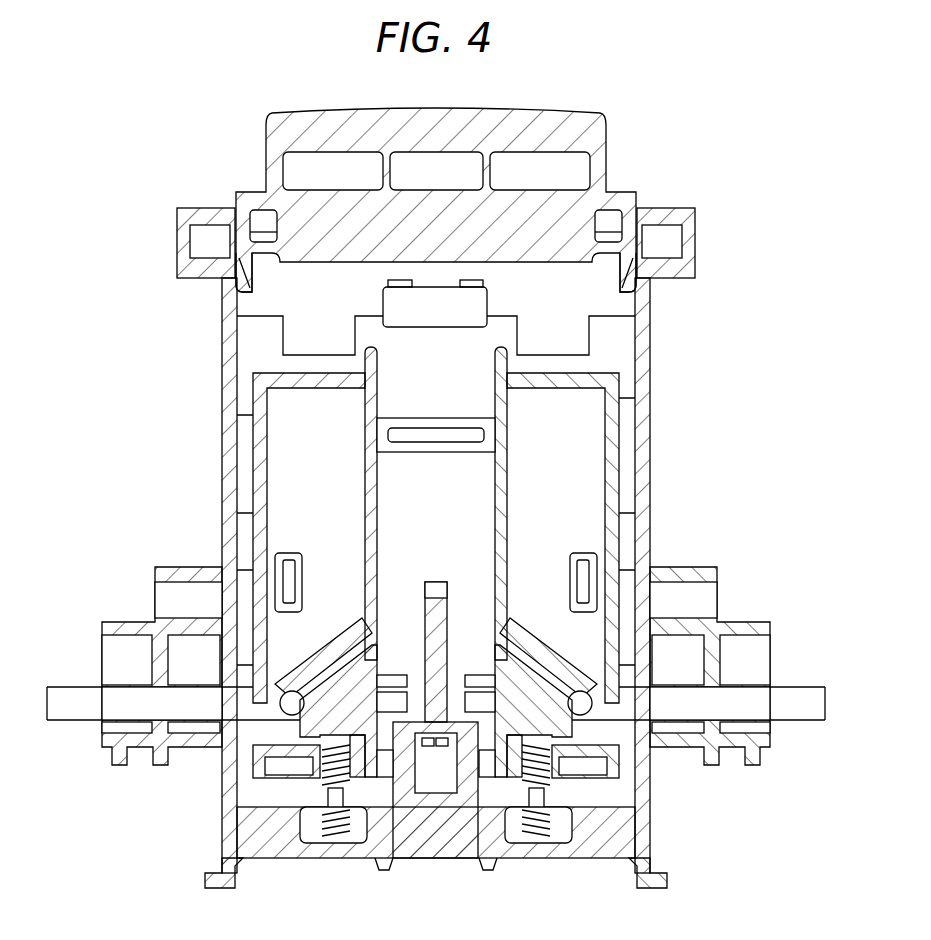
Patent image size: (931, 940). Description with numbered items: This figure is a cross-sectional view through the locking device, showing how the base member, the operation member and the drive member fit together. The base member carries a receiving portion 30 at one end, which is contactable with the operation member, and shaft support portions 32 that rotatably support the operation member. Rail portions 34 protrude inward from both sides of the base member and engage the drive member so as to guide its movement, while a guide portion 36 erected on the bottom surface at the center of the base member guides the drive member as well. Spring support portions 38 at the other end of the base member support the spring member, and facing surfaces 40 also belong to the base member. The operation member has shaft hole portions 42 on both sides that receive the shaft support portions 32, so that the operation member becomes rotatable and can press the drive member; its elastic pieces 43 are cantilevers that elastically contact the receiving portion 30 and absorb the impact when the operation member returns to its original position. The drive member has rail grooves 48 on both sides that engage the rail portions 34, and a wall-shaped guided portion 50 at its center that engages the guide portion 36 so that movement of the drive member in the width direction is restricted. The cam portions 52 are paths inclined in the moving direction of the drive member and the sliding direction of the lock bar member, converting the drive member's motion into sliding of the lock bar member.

The receiving portion 30 is at (453, 292).
The shaft support portion 32 is at (237, 272).
The rail portion 34 is at (243, 473).
The guide portion 36 is at (447, 450).
The spring support portion 38 is at (333, 828).
The facing surface 40 is at (128, 684).
The shaft hole portion 42 is at (246, 270).
The elastic piece 43 is at (397, 281).
The rail groove 48 is at (253, 445).
The guided portion 50 is at (365, 494).
The cam portion 52 is at (343, 652).